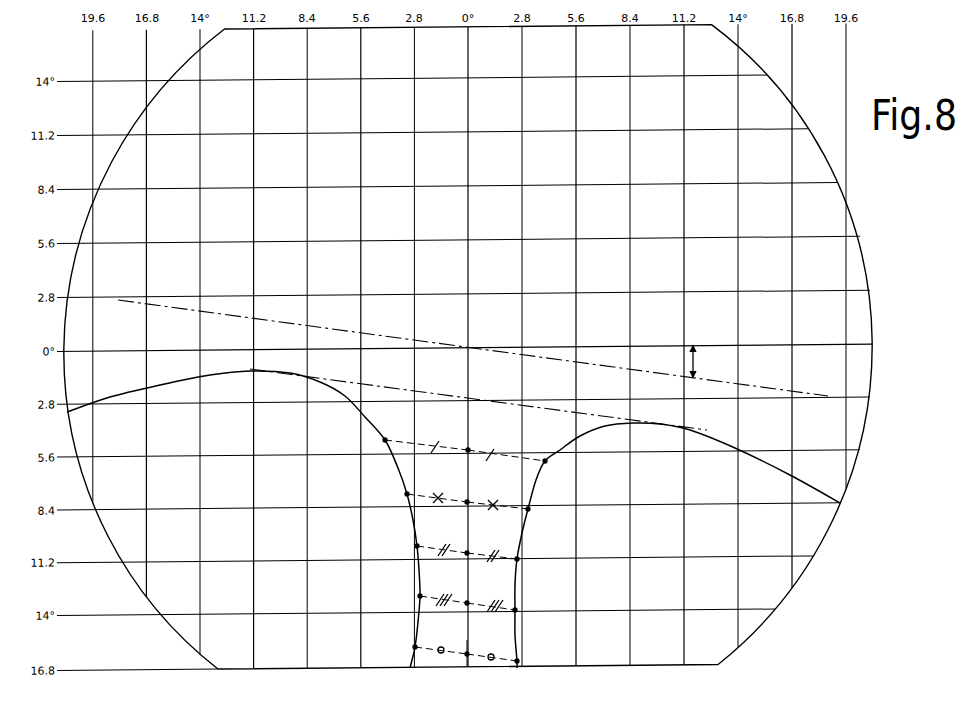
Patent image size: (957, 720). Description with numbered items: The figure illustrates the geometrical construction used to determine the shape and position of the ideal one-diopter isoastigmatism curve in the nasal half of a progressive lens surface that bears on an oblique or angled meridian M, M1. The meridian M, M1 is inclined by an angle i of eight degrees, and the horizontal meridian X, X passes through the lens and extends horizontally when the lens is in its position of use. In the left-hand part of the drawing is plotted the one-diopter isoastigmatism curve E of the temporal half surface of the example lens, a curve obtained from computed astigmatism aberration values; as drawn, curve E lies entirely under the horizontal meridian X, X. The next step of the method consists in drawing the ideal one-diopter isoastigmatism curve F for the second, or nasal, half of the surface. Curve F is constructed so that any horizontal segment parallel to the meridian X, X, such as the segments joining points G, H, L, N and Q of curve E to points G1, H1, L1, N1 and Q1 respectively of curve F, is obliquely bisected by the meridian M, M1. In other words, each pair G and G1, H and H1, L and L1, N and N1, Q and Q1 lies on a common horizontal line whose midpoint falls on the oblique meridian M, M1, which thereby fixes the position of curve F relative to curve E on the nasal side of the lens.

The meridian M is at (470, 49).
The meridian M1 is at (466, 668).
The horizontal meridian X is at (119, 302).
The 1 diopter isoastigmatism curve E is at (110, 397).
The ideal 1 diopter isoastigmatism curve F is at (727, 444).
The point of curve E G is at (385, 440).
The point of curve F G1 is at (545, 461).
The point of curve E H is at (407, 494).
The point of curve F H1 is at (528, 509).
The point of curve E L is at (417, 546).
The point of curve F L1 is at (517, 559).
The point of curve E N is at (420, 596).
The point of curve F N1 is at (515, 610).
The point of curve E Q is at (415, 647).
The point of curve F Q1 is at (517, 667).
The angle i is at (712, 361).